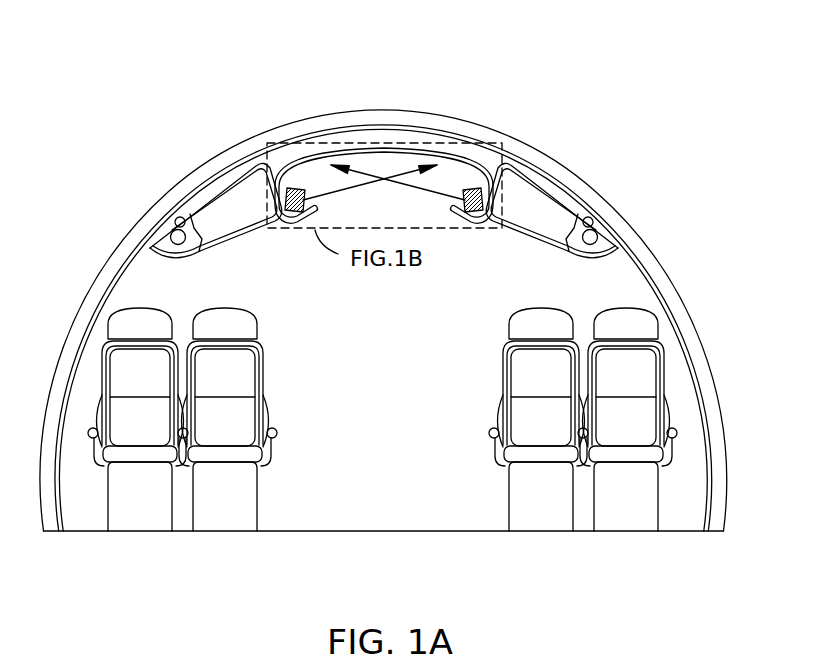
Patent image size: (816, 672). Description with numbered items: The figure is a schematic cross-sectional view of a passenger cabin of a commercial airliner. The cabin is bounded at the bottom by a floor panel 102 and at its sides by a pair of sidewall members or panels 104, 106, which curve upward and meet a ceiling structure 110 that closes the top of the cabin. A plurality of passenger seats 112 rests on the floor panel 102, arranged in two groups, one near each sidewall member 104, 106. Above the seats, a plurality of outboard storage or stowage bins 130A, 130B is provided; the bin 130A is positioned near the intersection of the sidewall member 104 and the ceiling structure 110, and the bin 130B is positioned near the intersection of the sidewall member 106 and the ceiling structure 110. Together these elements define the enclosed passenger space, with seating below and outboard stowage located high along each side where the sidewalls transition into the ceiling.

The floor panel 102 is at (402, 533).
The sidewall member 104 is at (118, 278).
The sidewall member 106 is at (650, 290).
The ceiling structure 110 is at (375, 146).
The passenger seats 112 is at (528, 325).
The outboard storage/stowage bin 130A is at (228, 223).
The outboard storage/stowage bin 130B is at (543, 233).